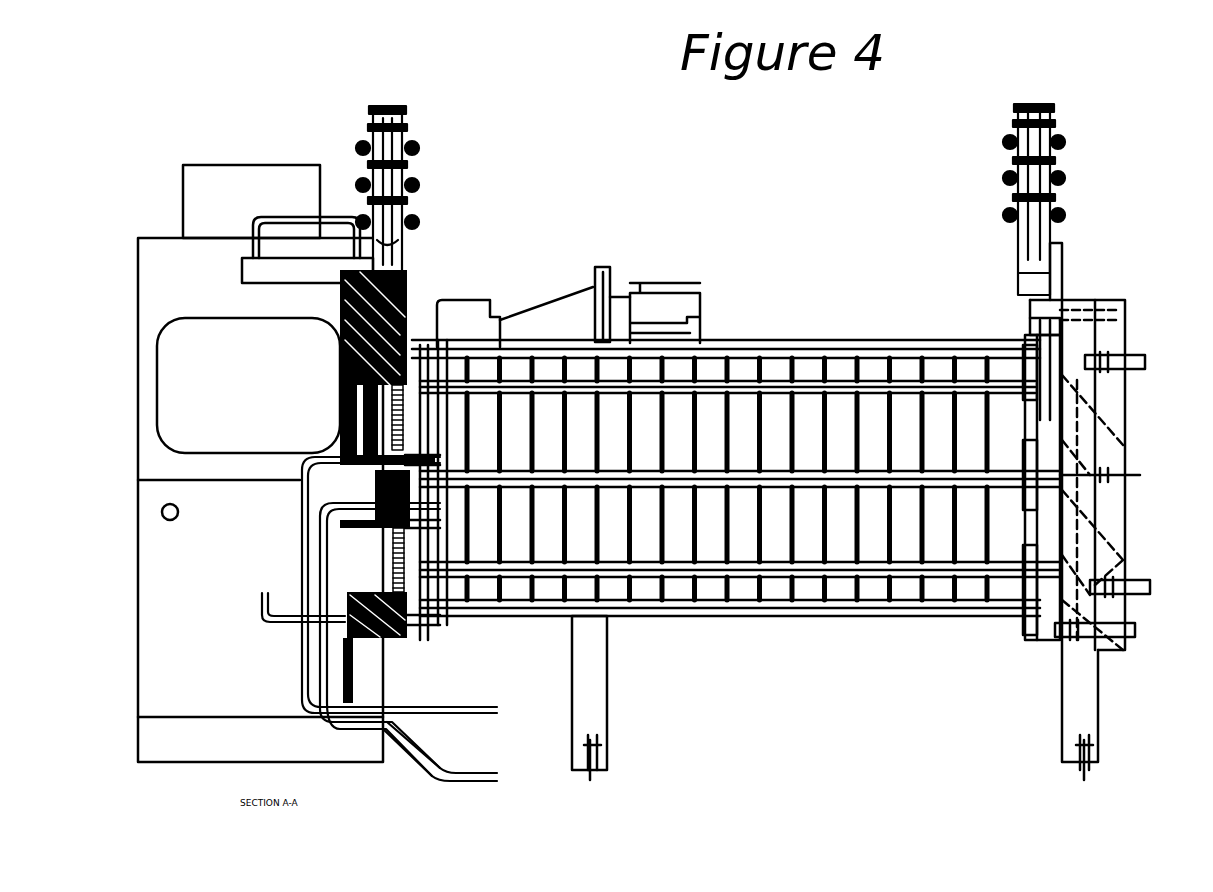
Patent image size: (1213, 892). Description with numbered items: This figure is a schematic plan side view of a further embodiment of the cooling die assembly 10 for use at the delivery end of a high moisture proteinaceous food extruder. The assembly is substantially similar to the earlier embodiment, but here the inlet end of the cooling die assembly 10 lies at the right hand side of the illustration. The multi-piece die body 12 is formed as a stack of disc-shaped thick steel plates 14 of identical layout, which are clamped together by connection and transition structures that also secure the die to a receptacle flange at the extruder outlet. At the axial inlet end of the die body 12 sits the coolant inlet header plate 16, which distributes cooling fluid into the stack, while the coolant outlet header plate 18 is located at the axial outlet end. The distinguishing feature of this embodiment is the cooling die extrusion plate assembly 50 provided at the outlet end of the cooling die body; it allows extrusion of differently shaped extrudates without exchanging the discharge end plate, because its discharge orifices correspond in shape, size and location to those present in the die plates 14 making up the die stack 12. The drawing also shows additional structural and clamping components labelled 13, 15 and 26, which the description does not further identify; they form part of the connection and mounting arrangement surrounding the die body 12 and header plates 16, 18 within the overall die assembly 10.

The cooling die assembly 10 is at (780, 316).
The multi-piece die body 12 is at (746, 637).
The end bracket 13 is at (1132, 338).
The disc-shaped thick steel plates 14 is at (847, 585).
The end plate 15 is at (1074, 298).
The coolant inlet header plate 16 is at (1040, 612).
The coolant outlet header plate 18 is at (430, 638).
The terminal post 26 is at (402, 113).
The cooling die extrusion plate assembly 50 is at (410, 557).